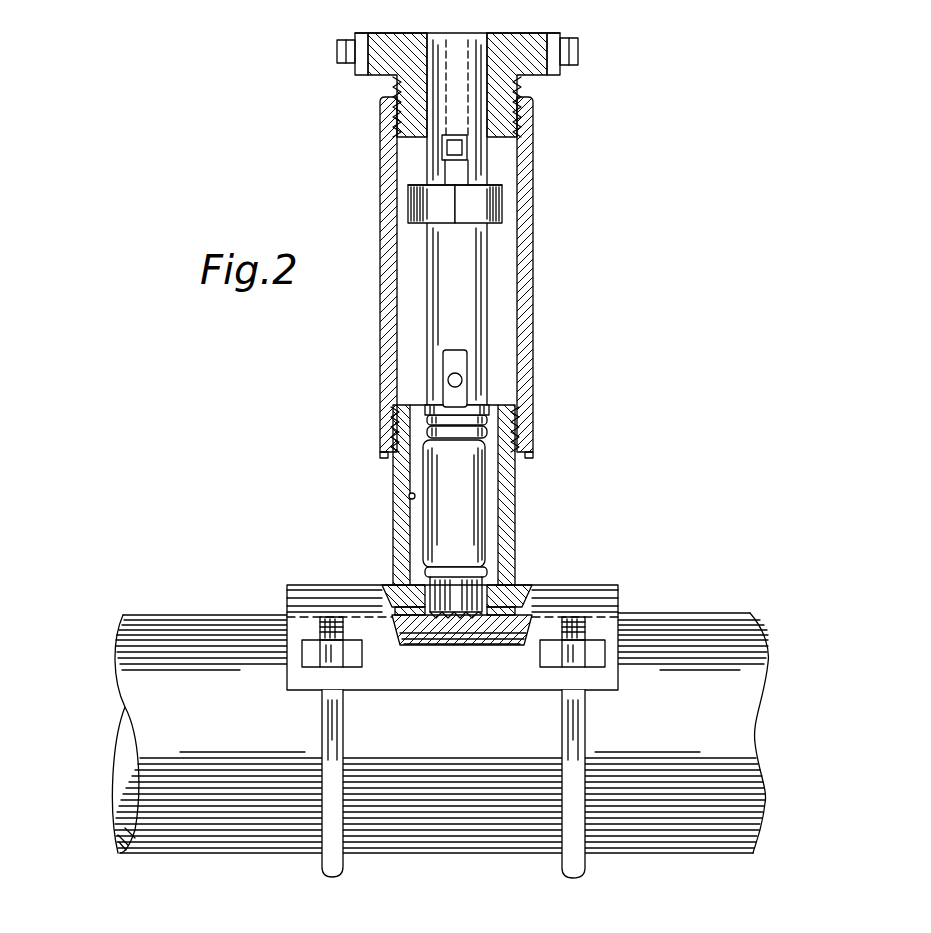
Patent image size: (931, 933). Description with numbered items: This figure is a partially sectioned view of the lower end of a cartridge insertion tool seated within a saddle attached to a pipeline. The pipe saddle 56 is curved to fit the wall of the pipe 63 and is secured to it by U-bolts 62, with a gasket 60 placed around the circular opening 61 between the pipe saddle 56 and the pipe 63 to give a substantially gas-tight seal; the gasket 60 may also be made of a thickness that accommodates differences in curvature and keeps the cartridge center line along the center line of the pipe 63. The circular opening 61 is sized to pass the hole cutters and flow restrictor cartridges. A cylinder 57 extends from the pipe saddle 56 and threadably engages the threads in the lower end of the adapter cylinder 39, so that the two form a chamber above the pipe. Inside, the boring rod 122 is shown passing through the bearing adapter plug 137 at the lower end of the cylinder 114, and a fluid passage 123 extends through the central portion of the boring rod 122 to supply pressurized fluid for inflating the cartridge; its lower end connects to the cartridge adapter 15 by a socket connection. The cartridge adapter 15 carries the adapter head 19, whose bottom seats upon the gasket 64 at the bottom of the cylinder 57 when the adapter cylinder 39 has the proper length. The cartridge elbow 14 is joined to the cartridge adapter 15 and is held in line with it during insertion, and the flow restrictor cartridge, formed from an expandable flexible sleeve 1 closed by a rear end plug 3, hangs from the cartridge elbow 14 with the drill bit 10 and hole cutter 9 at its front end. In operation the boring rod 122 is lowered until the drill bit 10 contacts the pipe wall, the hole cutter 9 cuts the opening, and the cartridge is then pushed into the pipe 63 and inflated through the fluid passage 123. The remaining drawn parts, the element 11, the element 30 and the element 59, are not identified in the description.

The expandable flexible sleeve 1 is at (455, 529).
The rear end plug 3 is at (493, 416).
The hole cutter 9 is at (470, 624).
The drill bit 10 is at (455, 626).
The sealing rings 11 is at (412, 431).
The cartridge elbow 14 is at (440, 392).
The cartridge adapter 15 is at (426, 312).
The adapter head 19 is at (503, 205).
The lock nut 30 is at (408, 205).
The adapter cylinder 39 is at (534, 290).
The pipe saddle 56 is at (600, 585).
The cylinder 57 is at (517, 469).
The port 59 is at (410, 496).
The gasket 60 is at (507, 603).
The circular opening 61 is at (398, 588).
The U-bolts 62 is at (322, 717).
The pipe 63 is at (143, 704).
The gasket 64 is at (492, 578).
The cylinder 114 is at (560, 36).
The boring rod 122 is at (480, 118).
The fluid passage 123 is at (445, 93).
The bearing adapter plug 137 is at (548, 78).